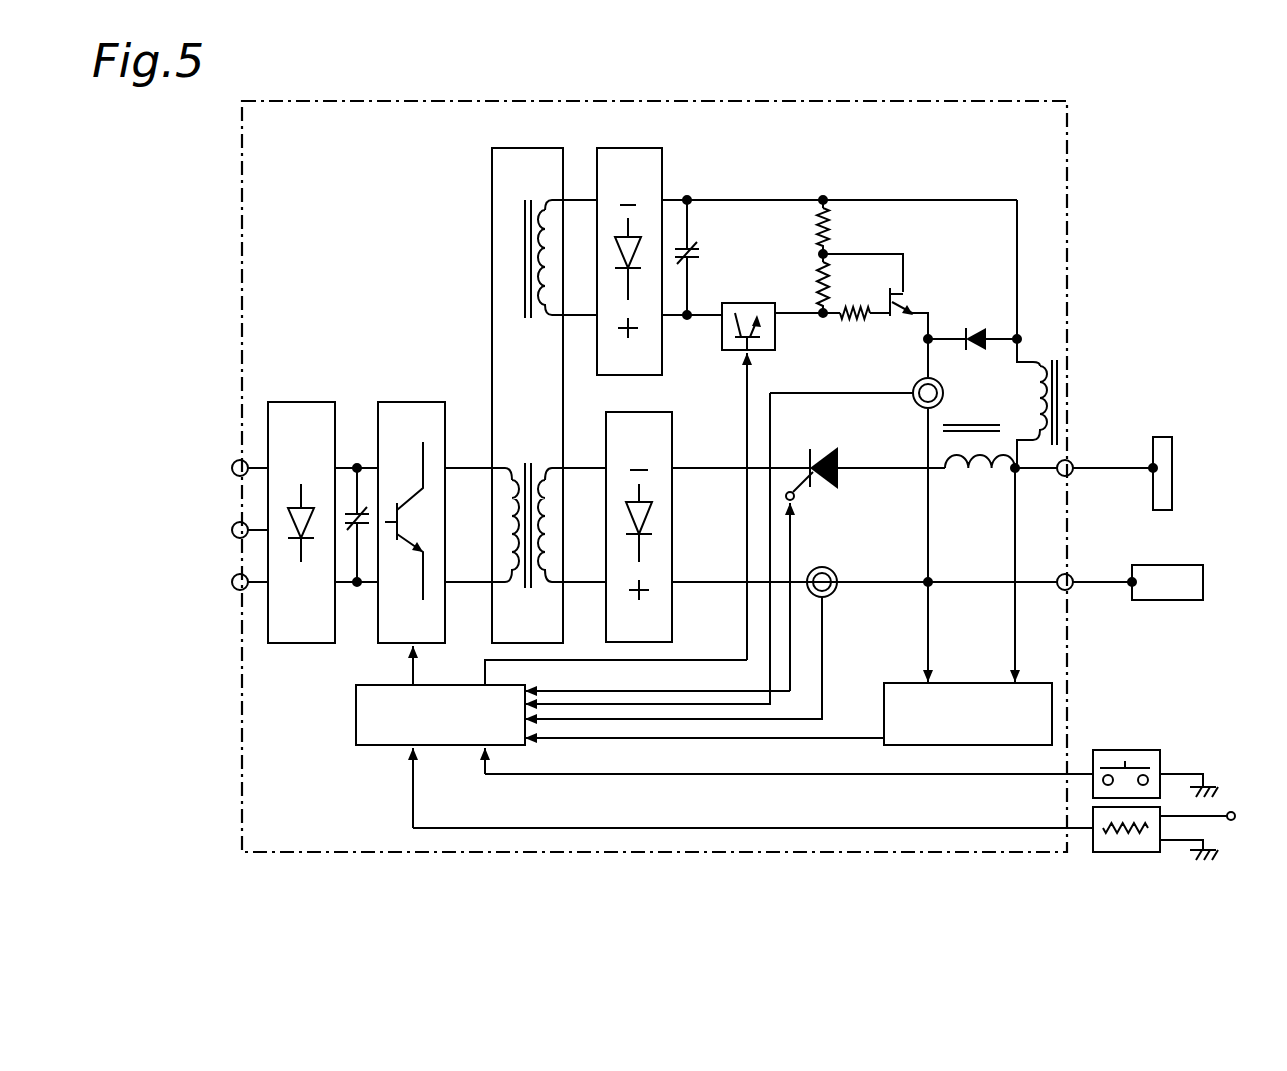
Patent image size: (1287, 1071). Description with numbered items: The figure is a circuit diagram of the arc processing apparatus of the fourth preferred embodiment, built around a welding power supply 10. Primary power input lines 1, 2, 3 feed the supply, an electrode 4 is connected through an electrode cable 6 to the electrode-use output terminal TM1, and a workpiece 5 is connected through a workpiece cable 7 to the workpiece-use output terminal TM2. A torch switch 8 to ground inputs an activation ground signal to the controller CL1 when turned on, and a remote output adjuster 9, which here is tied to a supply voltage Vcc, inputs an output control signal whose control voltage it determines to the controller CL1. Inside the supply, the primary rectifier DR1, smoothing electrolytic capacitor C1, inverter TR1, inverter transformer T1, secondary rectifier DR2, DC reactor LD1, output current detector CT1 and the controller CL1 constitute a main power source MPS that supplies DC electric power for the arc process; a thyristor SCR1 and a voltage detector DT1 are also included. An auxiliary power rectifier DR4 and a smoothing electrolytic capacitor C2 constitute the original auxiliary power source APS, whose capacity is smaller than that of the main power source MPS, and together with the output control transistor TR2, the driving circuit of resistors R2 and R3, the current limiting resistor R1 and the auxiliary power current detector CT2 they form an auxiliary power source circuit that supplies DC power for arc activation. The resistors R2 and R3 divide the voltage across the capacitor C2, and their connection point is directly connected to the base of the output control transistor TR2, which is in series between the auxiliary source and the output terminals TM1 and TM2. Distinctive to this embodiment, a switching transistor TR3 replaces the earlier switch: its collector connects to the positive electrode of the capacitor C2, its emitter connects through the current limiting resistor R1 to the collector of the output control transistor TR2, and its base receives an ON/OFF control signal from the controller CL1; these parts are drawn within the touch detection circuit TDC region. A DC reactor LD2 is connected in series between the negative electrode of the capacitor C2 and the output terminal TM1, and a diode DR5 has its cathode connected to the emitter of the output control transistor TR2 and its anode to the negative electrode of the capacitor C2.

The primary power input line 1 is at (232, 468).
The primary power input line 2 is at (232, 530).
The primary power input line 3 is at (232, 582).
The electrode 4 is at (1172, 485).
The workpiece 5 is at (1203, 588).
The electrode cable 6 is at (1102, 466).
The workpiece cable 7 is at (1100, 580).
The torch switch 8 is at (1128, 750).
The remote output adjuster 9 is at (1115, 852).
The welding power supply 10 is at (1067, 200).
The primary rectifier DR1 is at (283, 402).
The smoothing electrolytic capacitor C1 is at (357, 466).
The inverter TR1 is at (393, 402).
The inverter transformer T1 is at (507, 148).
The auxiliary power source APS is at (752, 139).
The auxiliary power rectifier DR4 is at (603, 148).
The smoothing electrolytic capacitor C2 is at (687, 242).
The switching transistor TR3 is at (722, 333).
The touch detection circuit TDC is at (900, 250).
The current limiting resistor R1 is at (849, 322).
The resistor R2 is at (818, 230).
The resistor R3 is at (818, 282).
The output control transistor TR2 is at (906, 290).
The diode DR5 is at (976, 333).
The auxiliary power current detector CT2 is at (915, 390).
The DC reactor LD2 is at (1033, 406).
The DC reactor LD1 is at (968, 472).
The thyristor SCR1 is at (820, 486).
The main power source MPS is at (915, 562).
The output current detector CT1 is at (837, 593).
The secondary rectifier DR2 is at (612, 412).
The electrode-use output terminal TM1 is at (1066, 477).
The workpiece-use output terminal TM2 is at (1066, 591).
The voltage detector DT1 is at (985, 683).
The controller CL1 is at (456, 746).
The supply voltage Vcc is at (1218, 816).